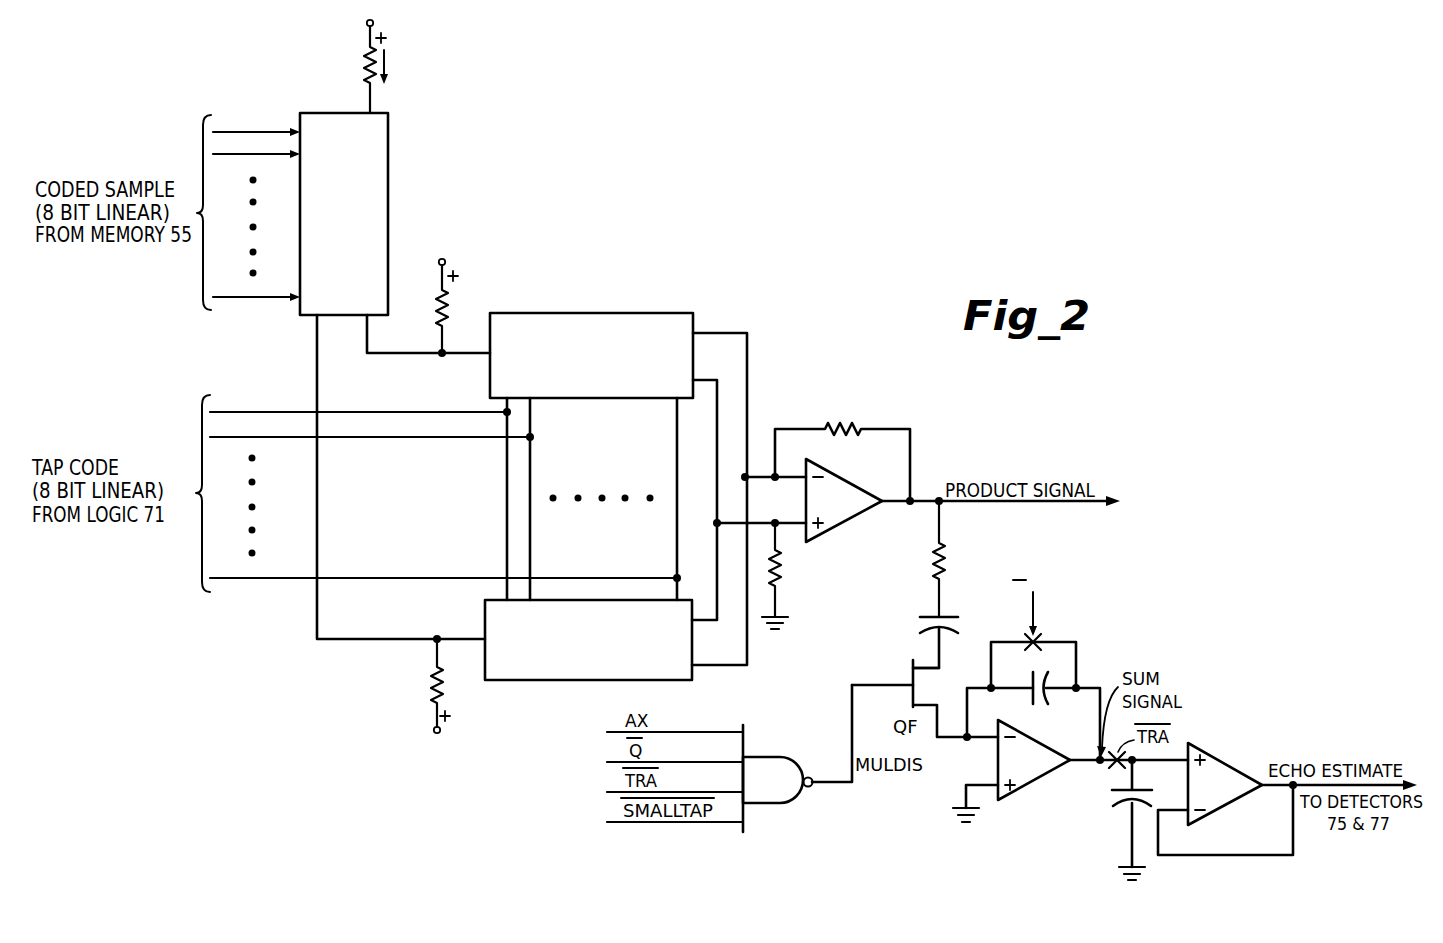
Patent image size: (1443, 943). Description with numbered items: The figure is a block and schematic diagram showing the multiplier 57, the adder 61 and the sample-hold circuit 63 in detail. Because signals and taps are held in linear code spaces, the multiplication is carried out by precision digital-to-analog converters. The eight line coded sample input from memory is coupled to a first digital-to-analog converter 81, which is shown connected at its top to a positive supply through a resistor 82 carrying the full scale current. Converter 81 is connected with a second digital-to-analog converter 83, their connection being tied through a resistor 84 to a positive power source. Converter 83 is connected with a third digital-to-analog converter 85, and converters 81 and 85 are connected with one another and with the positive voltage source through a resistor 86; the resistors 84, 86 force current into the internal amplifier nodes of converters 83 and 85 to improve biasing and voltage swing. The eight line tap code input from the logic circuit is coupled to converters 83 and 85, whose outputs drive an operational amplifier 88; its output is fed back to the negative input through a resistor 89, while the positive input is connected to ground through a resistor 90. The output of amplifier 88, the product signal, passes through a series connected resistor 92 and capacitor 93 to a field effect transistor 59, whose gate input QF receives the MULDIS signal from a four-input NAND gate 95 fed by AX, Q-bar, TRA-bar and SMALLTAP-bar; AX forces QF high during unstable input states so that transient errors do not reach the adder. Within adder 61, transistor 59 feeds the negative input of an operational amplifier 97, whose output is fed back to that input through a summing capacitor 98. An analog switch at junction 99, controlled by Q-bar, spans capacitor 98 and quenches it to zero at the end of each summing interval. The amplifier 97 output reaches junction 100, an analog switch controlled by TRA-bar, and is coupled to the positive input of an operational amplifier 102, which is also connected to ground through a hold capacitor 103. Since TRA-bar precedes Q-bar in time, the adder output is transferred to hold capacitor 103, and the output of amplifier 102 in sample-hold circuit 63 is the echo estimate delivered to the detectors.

The multiplier 57 is at (266, 694).
The transistor 59 is at (908, 667).
The adder 61 is at (1002, 827).
The sample-hold circuit 63 is at (1256, 866).
The first digital-to-analog converter 81 is at (388, 205).
The full scale current resistor 82 is at (368, 70).
The second digital-to-analog converter 83 is at (623, 313).
The resistor 84 is at (436, 318).
The third digital-to-analog converter 85 is at (567, 680).
The resistor 86 is at (432, 696).
The operational amplifier 88 is at (828, 532).
The resistor 89 is at (862, 431).
The resistor 90 is at (782, 578).
The resistor 92 is at (946, 566).
The capacitor 93 is at (926, 627).
The NAND gate 95 is at (763, 803).
The operational amplifier 97 is at (1020, 792).
The summing capacitor 98 is at (1047, 706).
The junction 99 is at (1042, 640).
The junction 100 is at (1115, 769).
The operational amplifier 102 is at (1222, 757).
The hold capacitor 103 is at (1118, 808).